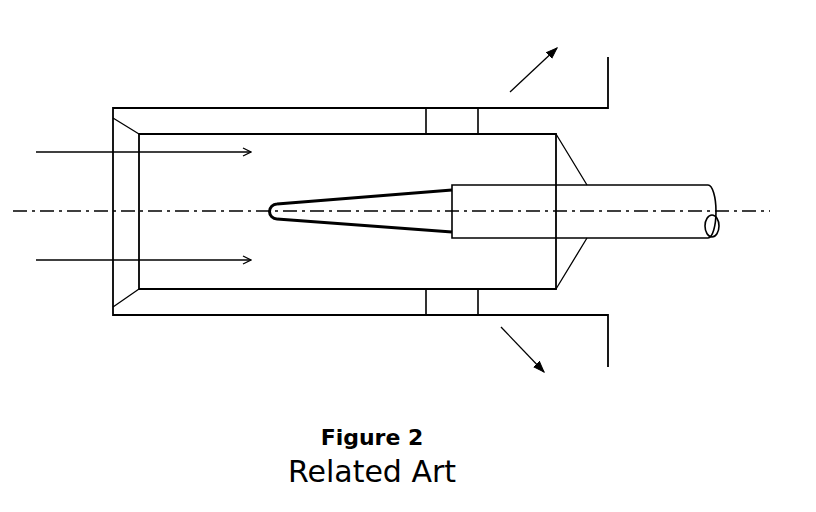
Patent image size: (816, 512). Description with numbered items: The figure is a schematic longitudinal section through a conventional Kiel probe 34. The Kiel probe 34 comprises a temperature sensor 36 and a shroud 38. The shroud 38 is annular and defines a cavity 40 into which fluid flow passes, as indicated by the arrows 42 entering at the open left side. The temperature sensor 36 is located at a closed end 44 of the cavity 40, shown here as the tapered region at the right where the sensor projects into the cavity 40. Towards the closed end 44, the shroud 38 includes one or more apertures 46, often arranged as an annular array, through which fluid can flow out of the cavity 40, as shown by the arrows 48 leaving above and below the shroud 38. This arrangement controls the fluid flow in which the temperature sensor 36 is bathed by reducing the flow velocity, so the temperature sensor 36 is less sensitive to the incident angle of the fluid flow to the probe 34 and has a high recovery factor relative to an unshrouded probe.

The Kiel probe 34 is at (122, 70).
The temperature sensor 36 is at (420, 218).
The shroud 38 is at (324, 115).
The cavity 40 is at (346, 176).
The arrows 42 is at (88, 260).
The closed end 44 is at (562, 165).
The apertures 46 is at (441, 93).
The arrows 48 is at (530, 73).